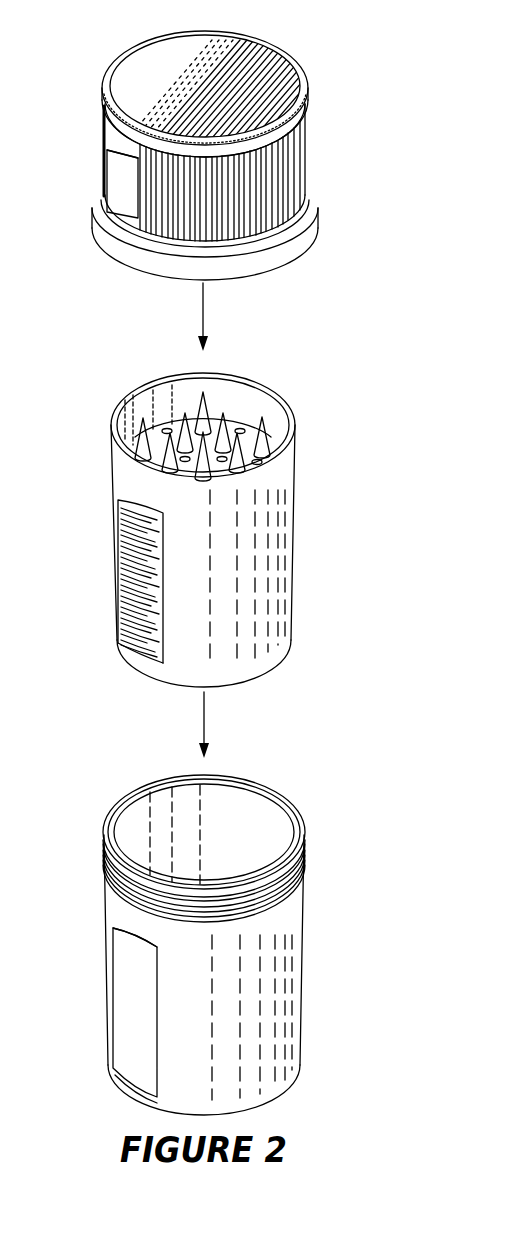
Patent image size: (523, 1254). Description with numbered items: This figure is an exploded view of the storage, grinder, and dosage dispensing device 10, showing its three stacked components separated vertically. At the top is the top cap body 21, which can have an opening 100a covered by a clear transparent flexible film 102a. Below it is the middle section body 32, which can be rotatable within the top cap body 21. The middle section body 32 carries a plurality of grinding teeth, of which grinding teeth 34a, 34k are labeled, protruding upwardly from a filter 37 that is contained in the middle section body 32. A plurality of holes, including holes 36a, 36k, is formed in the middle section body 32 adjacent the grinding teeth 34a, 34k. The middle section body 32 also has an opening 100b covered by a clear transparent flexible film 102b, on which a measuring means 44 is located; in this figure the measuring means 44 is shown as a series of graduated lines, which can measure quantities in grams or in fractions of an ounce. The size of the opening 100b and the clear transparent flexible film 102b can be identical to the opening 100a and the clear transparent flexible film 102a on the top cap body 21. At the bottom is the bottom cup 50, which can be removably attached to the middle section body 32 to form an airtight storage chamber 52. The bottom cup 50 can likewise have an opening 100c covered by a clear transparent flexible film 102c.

The storage, grinder, and dosage dispensing device 10 is at (56, 58).
The top cap body 21 is at (204, 155).
The opening 100a is at (106, 153).
The clear transparent flexible film 102a is at (118, 182).
The middle section body 32 is at (191, 514).
The grinding tooth 34a is at (207, 420).
The grinding tooth 34k is at (263, 430).
The hole 36a is at (239, 428).
The hole 36k is at (167, 427).
The filter 37 is at (157, 432).
The measuring means 44 is at (116, 586).
The clear transparent flexible film 102b is at (106, 571).
The opening 100b is at (130, 648).
The bottom cup 50 is at (195, 936).
The airtight storage chamber 52 is at (250, 812).
The opening 100c is at (116, 932).
The clear transparent flexible film 102c is at (120, 1011).